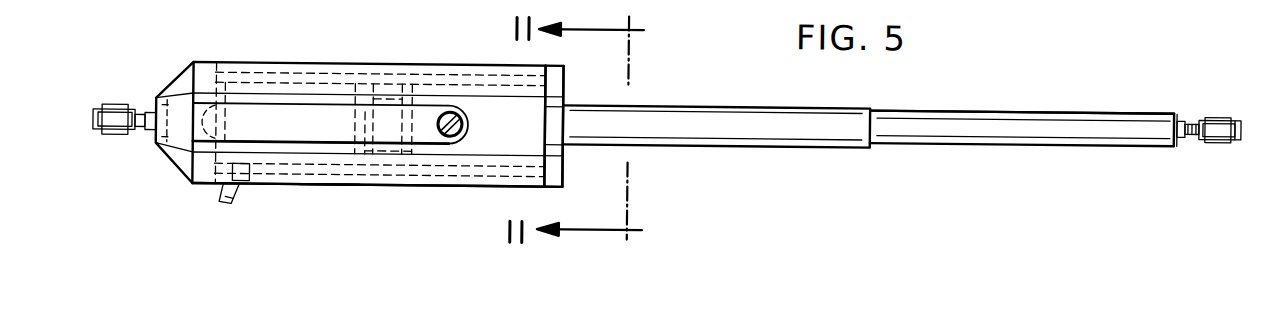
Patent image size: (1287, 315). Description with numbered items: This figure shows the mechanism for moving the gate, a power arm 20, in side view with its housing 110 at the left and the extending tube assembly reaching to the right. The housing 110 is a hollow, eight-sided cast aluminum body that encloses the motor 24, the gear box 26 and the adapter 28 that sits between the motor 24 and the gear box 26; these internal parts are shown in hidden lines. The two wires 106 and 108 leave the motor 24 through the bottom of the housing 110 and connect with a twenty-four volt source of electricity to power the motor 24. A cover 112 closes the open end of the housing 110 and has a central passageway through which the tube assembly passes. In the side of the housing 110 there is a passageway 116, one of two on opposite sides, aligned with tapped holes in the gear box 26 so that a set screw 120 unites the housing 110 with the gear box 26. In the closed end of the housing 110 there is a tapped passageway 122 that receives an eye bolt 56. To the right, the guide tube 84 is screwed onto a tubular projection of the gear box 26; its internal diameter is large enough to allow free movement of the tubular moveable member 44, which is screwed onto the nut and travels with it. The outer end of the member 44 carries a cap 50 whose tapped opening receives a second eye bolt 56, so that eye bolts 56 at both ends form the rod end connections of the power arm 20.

The power arm 20 is at (1044, 106).
The motor 24 is at (216, 84).
The gear box 26 is at (510, 189).
The adapter 28 is at (388, 131).
The tubular moveable member 44 is at (1043, 118).
The cap 50 is at (1176, 102).
The eye bolt 56 is at (90, 113).
The guide tube 84 is at (770, 122).
The wire 106 is at (223, 200).
The wire 108 is at (231, 198).
The housing 110 is at (334, 185).
The cover 112 is at (598, 37).
The passageway 116 is at (463, 110).
The set screw 120 is at (438, 121).
The tapped passageway 122 is at (158, 144).